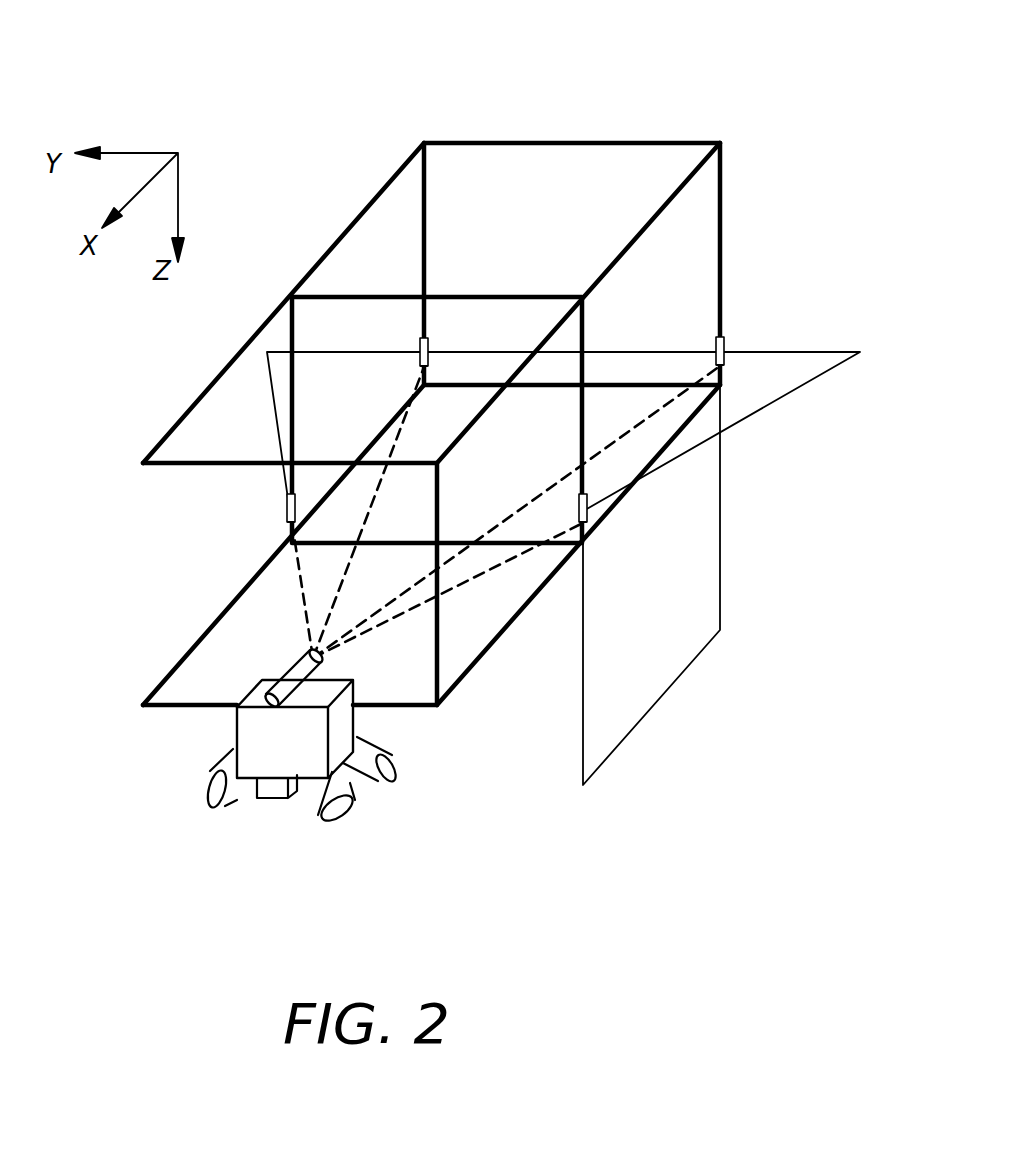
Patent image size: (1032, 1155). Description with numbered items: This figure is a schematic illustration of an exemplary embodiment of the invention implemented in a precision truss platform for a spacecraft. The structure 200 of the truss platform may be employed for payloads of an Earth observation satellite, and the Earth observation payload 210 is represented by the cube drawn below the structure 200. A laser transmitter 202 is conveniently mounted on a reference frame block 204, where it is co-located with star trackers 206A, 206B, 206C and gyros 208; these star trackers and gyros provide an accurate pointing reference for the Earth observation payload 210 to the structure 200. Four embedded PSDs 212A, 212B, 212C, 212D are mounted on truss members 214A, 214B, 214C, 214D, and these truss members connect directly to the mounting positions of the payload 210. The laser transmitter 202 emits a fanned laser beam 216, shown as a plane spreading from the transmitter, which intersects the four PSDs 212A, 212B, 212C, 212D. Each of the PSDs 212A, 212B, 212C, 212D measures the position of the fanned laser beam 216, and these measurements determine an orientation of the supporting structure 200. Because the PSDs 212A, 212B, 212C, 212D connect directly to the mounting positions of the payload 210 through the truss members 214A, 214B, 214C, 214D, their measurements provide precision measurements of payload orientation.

The structure 200 is at (672, 125).
The laser transmitter 202 is at (262, 686).
The reference frame block 204 is at (262, 760).
The star tracker 206A is at (383, 768).
The star tracker 206B is at (338, 808).
The star tracker 206C is at (213, 772).
The gyros 208 is at (270, 788).
The Earth observation payload 210 is at (722, 518).
The PSD 212A is at (726, 352).
The PSD 212B is at (587, 522).
The PSD 212C is at (286, 522).
The PSD 212D is at (418, 364).
The truss member 214A is at (722, 338).
The truss member 214B is at (586, 494).
The truss member 214C is at (286, 494).
The truss member 214D is at (421, 338).
The fanned laser beam 216 is at (805, 362).